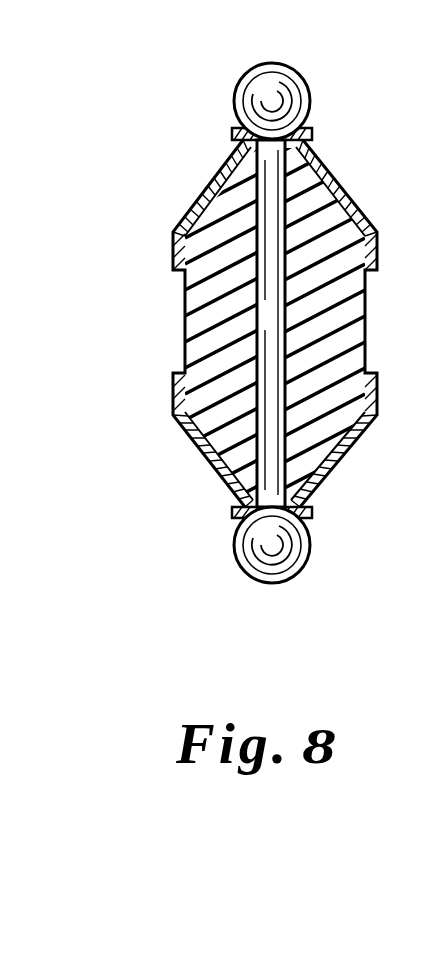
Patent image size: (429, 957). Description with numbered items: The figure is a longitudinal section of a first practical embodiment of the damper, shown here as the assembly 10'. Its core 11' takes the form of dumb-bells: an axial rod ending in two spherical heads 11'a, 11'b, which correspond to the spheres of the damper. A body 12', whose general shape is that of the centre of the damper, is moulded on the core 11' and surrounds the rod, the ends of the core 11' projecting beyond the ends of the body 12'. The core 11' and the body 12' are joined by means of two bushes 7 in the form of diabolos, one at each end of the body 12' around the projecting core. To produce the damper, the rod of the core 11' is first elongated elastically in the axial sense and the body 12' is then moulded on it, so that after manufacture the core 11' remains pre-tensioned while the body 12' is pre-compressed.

The cable control assembly 10' is at (228, 323).
The bush 7 is at (192, 218).
The core 11' is at (186, 323).
The spherical head 11'a is at (193, 94).
The spherical head 11'b is at (201, 545).
The body 12' is at (226, 311).